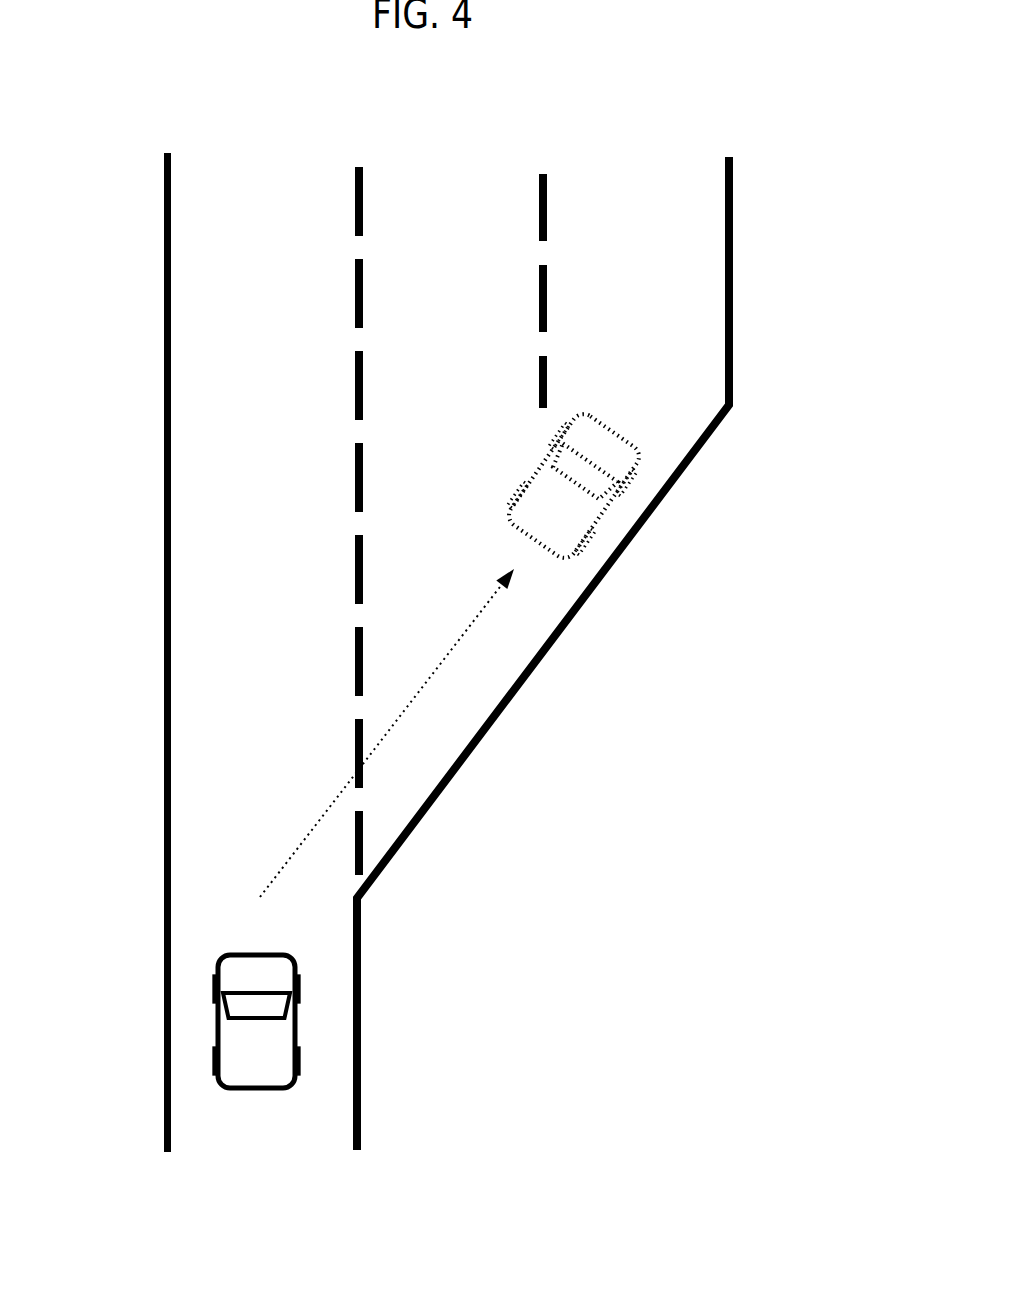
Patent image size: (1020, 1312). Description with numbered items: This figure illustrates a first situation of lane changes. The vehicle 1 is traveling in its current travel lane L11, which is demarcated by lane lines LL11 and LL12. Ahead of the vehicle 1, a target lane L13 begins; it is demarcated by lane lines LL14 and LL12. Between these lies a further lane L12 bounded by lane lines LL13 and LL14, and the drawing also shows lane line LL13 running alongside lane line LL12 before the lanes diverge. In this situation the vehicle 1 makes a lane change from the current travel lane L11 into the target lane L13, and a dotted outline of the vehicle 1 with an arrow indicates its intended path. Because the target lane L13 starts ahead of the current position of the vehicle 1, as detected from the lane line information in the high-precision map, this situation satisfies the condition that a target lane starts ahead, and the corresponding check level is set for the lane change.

The vehicle 1 is at (296, 998).
The lane line LL11 is at (164, 1132).
The lane line LL12 is at (353, 1132).
The lane line LL13 is at (364, 176).
The lane line LL14 is at (549, 176).
The current travel lane L11 is at (263, 1140).
The lane L12 is at (455, 211).
The target lane L13 is at (628, 211).